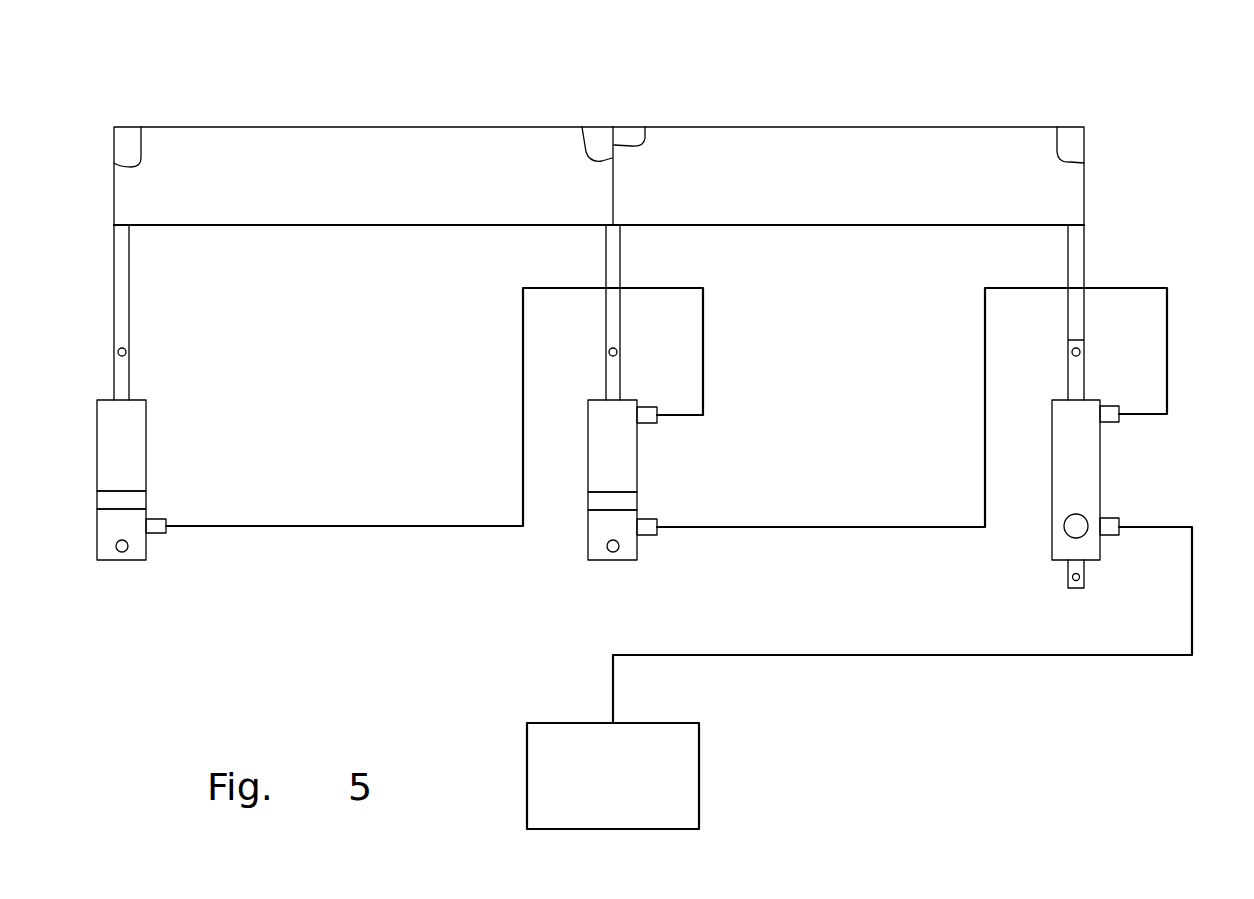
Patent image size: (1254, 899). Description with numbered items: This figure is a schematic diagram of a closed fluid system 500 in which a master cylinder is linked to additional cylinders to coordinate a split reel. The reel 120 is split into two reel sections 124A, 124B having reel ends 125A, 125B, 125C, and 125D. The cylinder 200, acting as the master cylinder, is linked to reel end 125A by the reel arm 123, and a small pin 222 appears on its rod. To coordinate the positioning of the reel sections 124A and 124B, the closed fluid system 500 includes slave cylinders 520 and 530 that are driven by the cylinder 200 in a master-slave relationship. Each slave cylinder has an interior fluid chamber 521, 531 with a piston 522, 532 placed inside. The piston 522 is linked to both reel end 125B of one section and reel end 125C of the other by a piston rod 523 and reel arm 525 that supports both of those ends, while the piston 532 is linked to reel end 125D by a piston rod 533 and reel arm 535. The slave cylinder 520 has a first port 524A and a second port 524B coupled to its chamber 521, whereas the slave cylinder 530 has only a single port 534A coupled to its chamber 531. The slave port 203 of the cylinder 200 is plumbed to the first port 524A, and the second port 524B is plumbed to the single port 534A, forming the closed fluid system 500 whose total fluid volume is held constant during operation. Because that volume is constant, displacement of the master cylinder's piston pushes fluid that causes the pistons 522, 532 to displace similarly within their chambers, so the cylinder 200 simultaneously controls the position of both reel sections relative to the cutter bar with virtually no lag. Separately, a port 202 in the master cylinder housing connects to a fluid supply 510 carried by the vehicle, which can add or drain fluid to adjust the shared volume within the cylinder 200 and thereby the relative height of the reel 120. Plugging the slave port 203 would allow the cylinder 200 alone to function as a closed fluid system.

The reel 120 is at (599, 188).
The reel section 124A is at (920, 127).
The reel section 124B is at (367, 127).
The reel end 125A is at (1057, 127).
The reel end 125B is at (645, 127).
The reel end 125C is at (589, 127).
The reel end 125D is at (141, 127).
The closed fluid system 500 is at (415, 315).
The slave cylinder 530 is at (185, 395).
The reel arm 535 is at (129, 260).
The piston rod 533 is at (129, 366).
The interior fluid chamber 531 is at (127, 433).
The piston 532 is at (140, 500).
The single port 534A is at (166, 532).
The slave cylinder 520 is at (661, 396).
The reel arm 525 is at (622, 259).
The piston rod 523 is at (606, 369).
The interior fluid chamber 521 is at (637, 446).
The piston 522 is at (630, 502).
The first port 524A is at (657, 533).
The second port 524B is at (660, 412).
The cylinder 200 is at (1144, 406).
The reel arm 123 is at (1084, 267).
The pin 222 is at (1084, 363).
The slave port 203 is at (1119, 422).
The port 202 is at (1120, 531).
The fluid supply 510 is at (699, 763).